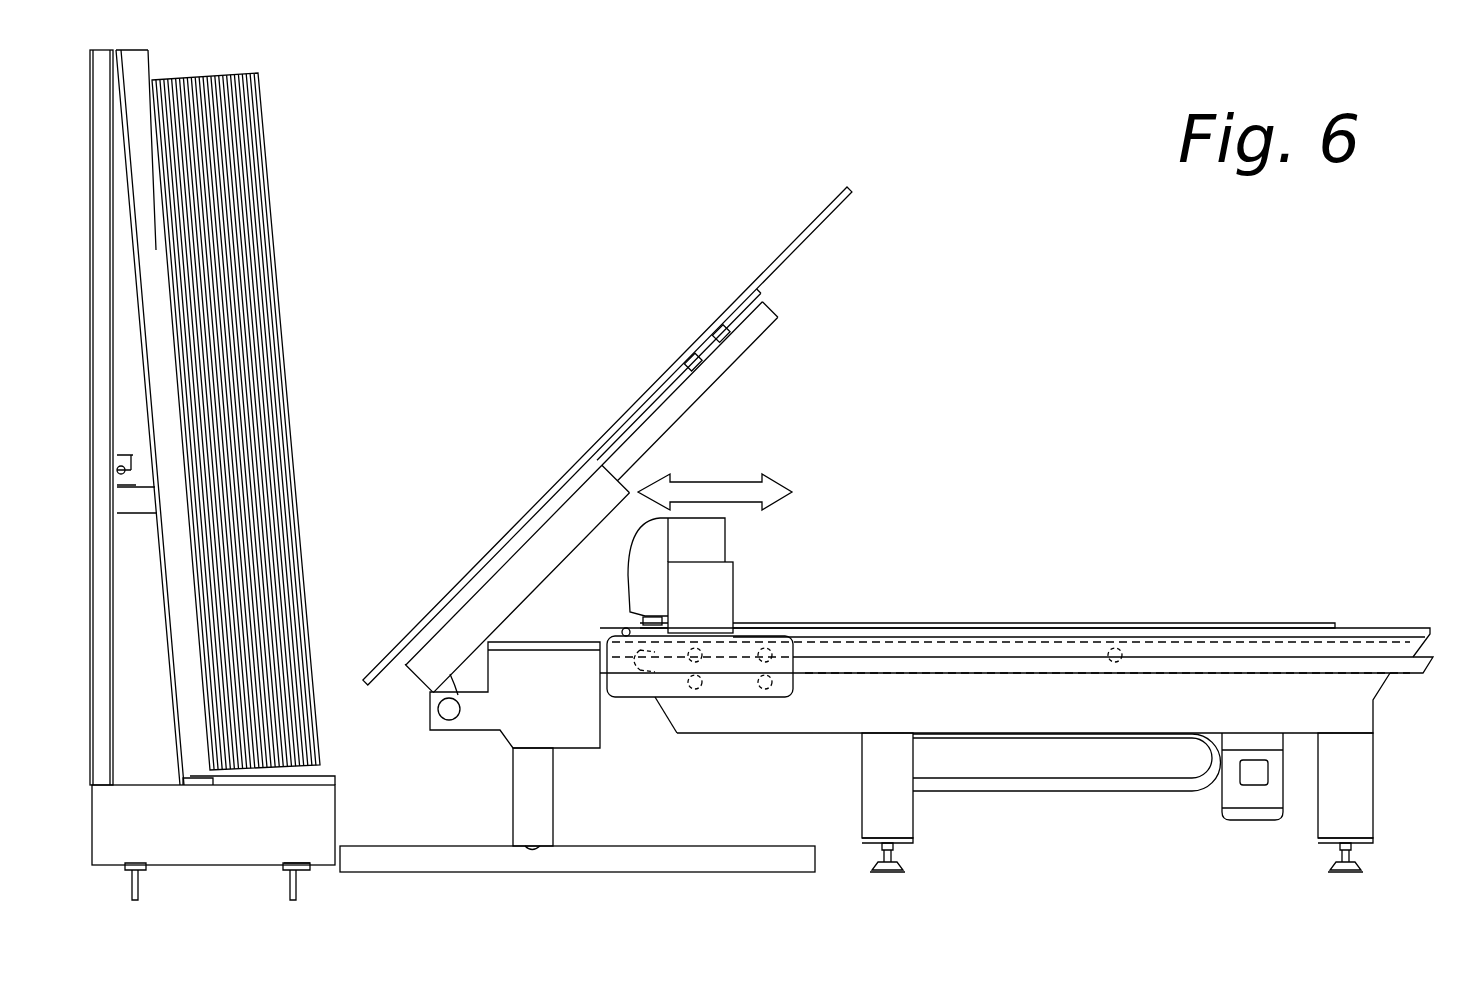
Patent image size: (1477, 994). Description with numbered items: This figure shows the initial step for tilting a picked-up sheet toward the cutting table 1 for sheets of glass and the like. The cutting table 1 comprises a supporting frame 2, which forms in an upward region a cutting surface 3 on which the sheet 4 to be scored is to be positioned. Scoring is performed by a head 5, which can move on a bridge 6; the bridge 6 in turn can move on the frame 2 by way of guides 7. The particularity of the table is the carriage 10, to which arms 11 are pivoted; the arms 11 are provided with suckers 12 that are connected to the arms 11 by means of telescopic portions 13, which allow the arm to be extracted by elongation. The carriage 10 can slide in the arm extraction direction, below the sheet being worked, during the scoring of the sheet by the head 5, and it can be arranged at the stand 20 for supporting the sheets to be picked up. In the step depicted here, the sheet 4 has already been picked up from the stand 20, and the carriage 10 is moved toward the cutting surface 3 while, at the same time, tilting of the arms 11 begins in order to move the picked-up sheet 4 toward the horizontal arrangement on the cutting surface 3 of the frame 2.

The cutting table 1 is at (597, 199).
The supporting frame 2 is at (1352, 706).
The cutting surface 3 is at (1385, 628).
The sheet 4 is at (262, 283).
The head 5 is at (752, 551).
The bridge 6 is at (722, 598).
The guides 7 is at (1270, 673).
The carriage 10 is at (602, 742).
The arms 11 is at (527, 574).
The suckers 12 is at (758, 290).
The telescopic portions 13 is at (695, 390).
The stand 20 is at (315, 828).